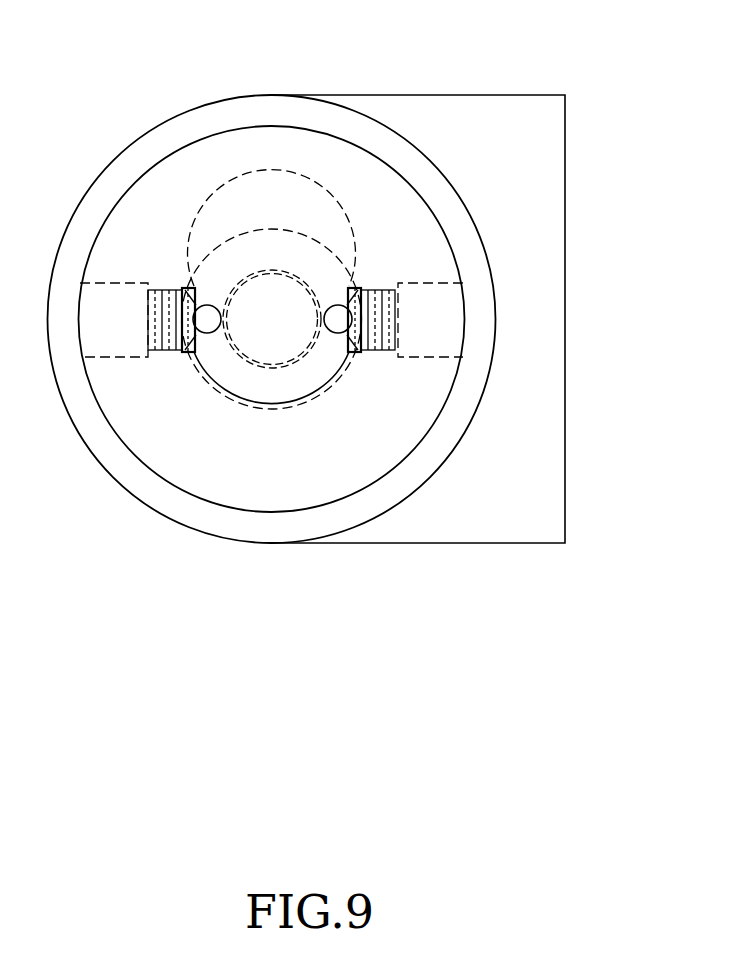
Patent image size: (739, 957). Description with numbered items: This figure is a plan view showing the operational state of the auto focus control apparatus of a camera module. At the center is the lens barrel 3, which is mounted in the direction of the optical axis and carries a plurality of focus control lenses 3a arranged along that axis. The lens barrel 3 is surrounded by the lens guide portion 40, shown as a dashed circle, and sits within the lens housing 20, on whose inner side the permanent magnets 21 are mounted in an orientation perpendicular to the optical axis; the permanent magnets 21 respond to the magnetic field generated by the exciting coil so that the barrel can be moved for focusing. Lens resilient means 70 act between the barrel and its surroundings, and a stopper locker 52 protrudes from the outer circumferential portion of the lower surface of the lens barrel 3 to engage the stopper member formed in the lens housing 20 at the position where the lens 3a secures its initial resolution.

The lens housing 20 is at (275, 107).
The permanent magnets 21 is at (452, 323).
The lens guide portion 40 is at (215, 250).
The lens barrel 3 is at (317, 275).
The focus control lenses 3a is at (265, 352).
The lens resilient means 70 is at (205, 334).
The stopper locker 52 is at (187, 355).